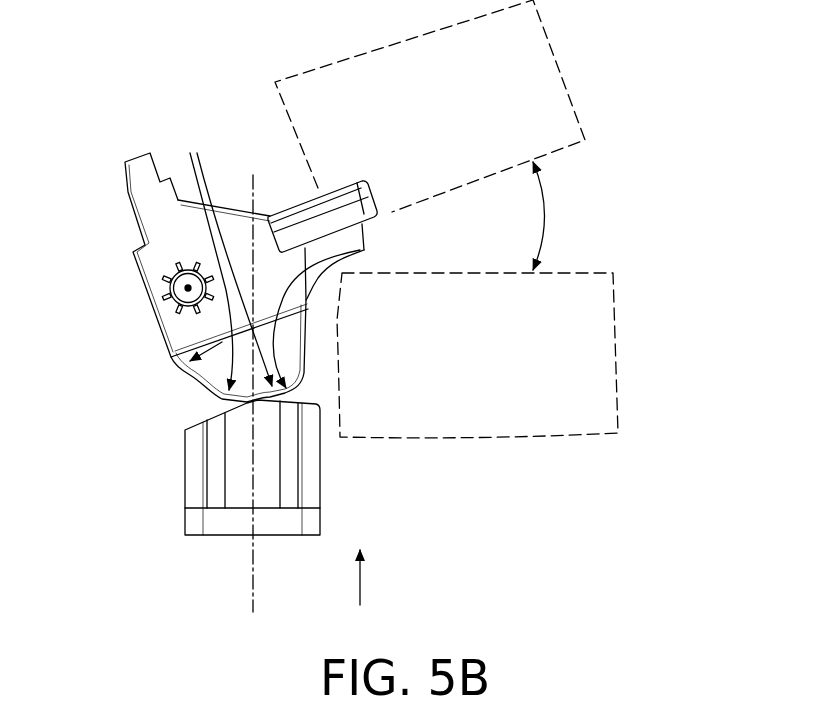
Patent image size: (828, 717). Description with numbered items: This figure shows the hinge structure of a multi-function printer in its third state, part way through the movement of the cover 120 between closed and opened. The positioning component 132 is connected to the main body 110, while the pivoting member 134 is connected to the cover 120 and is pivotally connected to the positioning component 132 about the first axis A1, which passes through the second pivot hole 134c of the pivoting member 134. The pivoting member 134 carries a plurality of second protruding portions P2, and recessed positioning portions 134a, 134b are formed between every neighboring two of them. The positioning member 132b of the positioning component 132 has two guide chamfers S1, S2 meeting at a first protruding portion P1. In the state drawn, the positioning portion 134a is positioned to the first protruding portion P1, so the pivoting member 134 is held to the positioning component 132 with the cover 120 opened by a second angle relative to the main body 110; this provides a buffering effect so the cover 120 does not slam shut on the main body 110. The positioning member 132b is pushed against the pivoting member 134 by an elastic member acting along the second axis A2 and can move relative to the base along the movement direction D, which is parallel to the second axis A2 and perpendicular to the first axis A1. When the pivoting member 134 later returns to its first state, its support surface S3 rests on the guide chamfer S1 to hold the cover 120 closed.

The main body 110 is at (615, 363).
The cover 120 is at (565, 72).
The positioning component 132 is at (206, 503).
The positioning member 132b is at (206, 503).
The pivoting member 134 is at (168, 232).
The positioning portion 134a is at (216, 420).
The positioning portion 134b is at (198, 388).
The second pivot hole 134c is at (136, 296).
The first axis A1 is at (143, 311).
The second axis A2 is at (256, 414).
The first protruding portion P1 is at (257, 412).
The second protruding portions P2 is at (222, 254).
The guide chamfer S1 is at (243, 403).
The guide chamfer S2 is at (292, 405).
The support surface S3 is at (362, 249).
The movement direction D is at (371, 577).